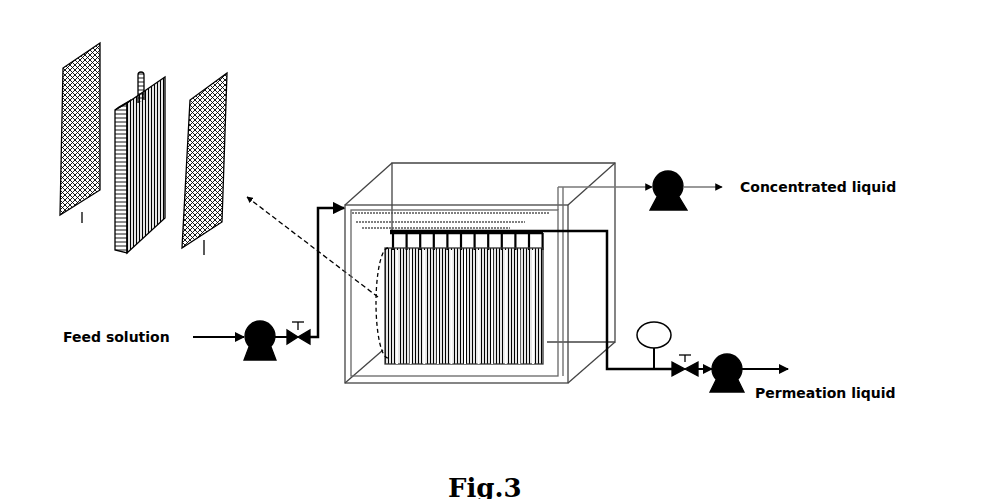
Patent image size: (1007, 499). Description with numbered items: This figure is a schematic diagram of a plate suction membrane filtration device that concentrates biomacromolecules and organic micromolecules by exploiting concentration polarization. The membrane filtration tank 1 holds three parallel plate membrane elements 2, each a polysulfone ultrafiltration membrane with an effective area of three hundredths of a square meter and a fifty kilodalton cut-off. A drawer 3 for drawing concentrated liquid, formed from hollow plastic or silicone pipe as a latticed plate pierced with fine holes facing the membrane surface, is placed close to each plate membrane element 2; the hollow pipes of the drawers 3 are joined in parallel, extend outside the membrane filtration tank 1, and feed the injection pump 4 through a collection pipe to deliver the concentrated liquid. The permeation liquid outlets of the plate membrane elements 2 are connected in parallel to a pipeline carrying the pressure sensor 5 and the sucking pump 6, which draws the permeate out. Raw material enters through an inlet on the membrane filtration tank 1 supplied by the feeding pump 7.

The membrane filtration tank 1 is at (450, 188).
The plate membrane elements 2 is at (117, 238).
The drawers for drawing concentrated liquid 3 is at (100, 55).
The injection pump 4 is at (662, 175).
The pressure sensor 5 is at (664, 322).
The sucking pump 6 is at (730, 392).
The feeding pump 7 is at (262, 360).